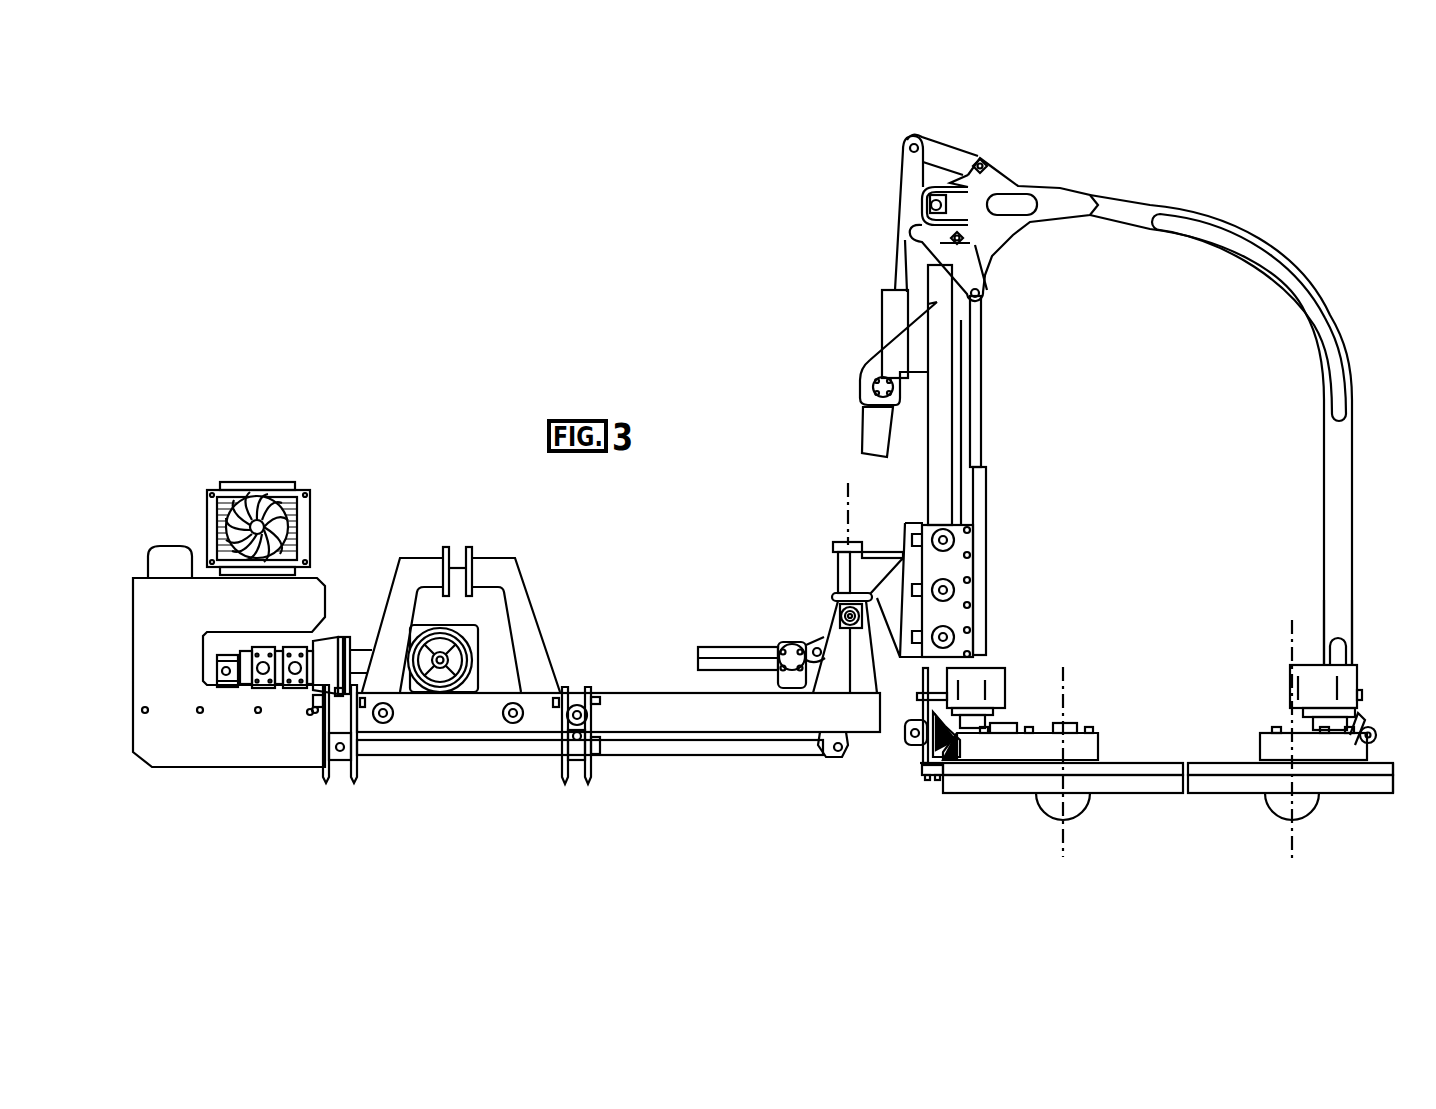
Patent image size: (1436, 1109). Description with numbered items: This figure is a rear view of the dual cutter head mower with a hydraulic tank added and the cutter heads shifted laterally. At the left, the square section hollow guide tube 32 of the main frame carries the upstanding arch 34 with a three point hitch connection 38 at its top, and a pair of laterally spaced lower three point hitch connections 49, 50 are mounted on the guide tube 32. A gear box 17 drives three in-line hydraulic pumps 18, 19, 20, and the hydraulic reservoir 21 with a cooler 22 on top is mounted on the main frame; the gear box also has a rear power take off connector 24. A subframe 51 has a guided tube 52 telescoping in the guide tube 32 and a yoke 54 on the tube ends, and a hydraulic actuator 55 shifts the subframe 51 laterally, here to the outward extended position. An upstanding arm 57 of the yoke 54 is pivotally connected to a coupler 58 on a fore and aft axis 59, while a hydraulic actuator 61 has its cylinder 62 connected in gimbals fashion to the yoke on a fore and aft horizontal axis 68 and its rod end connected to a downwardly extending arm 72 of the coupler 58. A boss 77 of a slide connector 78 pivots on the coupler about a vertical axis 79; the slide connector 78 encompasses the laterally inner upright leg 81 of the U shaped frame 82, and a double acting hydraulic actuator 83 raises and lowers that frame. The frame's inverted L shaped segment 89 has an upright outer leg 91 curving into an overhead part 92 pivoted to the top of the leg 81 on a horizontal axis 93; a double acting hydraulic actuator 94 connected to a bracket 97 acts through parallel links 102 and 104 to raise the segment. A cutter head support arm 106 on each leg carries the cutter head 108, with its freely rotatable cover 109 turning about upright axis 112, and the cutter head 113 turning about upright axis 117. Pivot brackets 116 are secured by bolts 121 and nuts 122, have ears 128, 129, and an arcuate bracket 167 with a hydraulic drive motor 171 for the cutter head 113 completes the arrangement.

The gear box 17 is at (416, 619).
The hydraulic pump 18 is at (231, 655).
The hydraulic pump 19 is at (261, 647).
The hydraulic pump 20 is at (298, 647).
The hydraulic reservoir 21 is at (306, 580).
The cooler 22 is at (256, 484).
The rear power take off connector 24 is at (440, 672).
The guide tube 32 is at (411, 712).
The arch 34 is at (498, 559).
The three point hitch connection 38 is at (470, 547).
The lower three point hitch connection 49 is at (325, 779).
The lower three point hitch connection 50 is at (563, 786).
The subframe 51 is at (645, 695).
The guided tube 52 is at (664, 712).
The yoke 54 is at (866, 683).
The hydraulic actuator 55 is at (513, 743).
The upstanding arm 57 is at (829, 683).
The coupler 58 is at (868, 612).
The fore and aft extending axis 59 is at (845, 611).
The hydraulic actuator 61 is at (736, 650).
The cylinder 62 is at (746, 658).
The fore and aft horizontal axis 68 is at (808, 648).
The downwardly extending arm 72 is at (812, 643).
The boss 77 is at (836, 563).
The slide connector 78 is at (904, 557).
The vertical axis 79 is at (847, 520).
The laterally inner upright leg 81 is at (944, 432).
The U shaped frame 82 is at (1132, 206).
The double acting hydraulic actuator 83 is at (981, 492).
The inverted L shaped segment 89 is at (1283, 252).
The upright outer leg 91 is at (1352, 500).
The overhead part 92 is at (1104, 190).
The horizontal axis 93 is at (930, 206).
The double acting hydraulic actuator 94 is at (893, 262).
The bracket 97 is at (878, 312).
The parallel link 102 is at (903, 188).
The parallel link 104 is at (953, 146).
The cutter head support arm 106 is at (1042, 731).
The cutter head 108 is at (1018, 780).
The freely rotatable cover 109 is at (1134, 783).
The upright axis 112 is at (1068, 825).
The cutter head 113 is at (1395, 782).
The pivot bracket 116 is at (1353, 716).
The upright axis 117 is at (1293, 823).
The bolt 121 is at (918, 694).
The nut 122 is at (915, 722).
The ear 128 is at (922, 757).
The ear 129 is at (1376, 734).
The arcuate bracket 167 is at (930, 778).
The hydraulic drive motor 171 is at (996, 676).